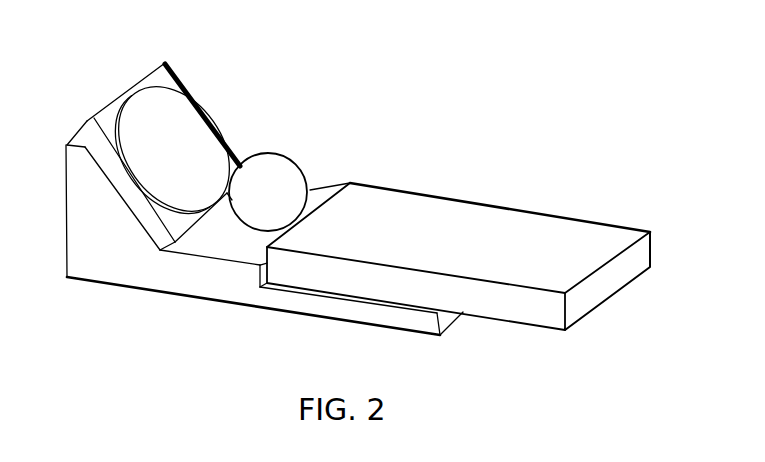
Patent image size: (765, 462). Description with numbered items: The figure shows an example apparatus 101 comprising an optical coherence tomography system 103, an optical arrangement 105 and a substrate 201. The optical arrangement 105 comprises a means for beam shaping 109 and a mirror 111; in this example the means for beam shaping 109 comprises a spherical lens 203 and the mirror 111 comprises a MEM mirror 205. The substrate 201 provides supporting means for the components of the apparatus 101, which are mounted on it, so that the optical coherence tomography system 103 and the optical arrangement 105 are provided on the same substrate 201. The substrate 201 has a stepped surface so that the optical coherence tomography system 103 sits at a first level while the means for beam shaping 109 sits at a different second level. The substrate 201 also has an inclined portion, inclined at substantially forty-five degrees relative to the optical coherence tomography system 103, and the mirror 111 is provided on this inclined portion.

The apparatus 101 is at (342, 147).
The optical coherence tomography system 103 is at (493, 253).
The optical arrangement 105 is at (248, 120).
The means for beam shaping 109 is at (284, 153).
The mirror 111 is at (188, 122).
The substrate 201 is at (139, 266).
The spherical lens 203 is at (309, 186).
The MEM mirror 205 is at (173, 93).